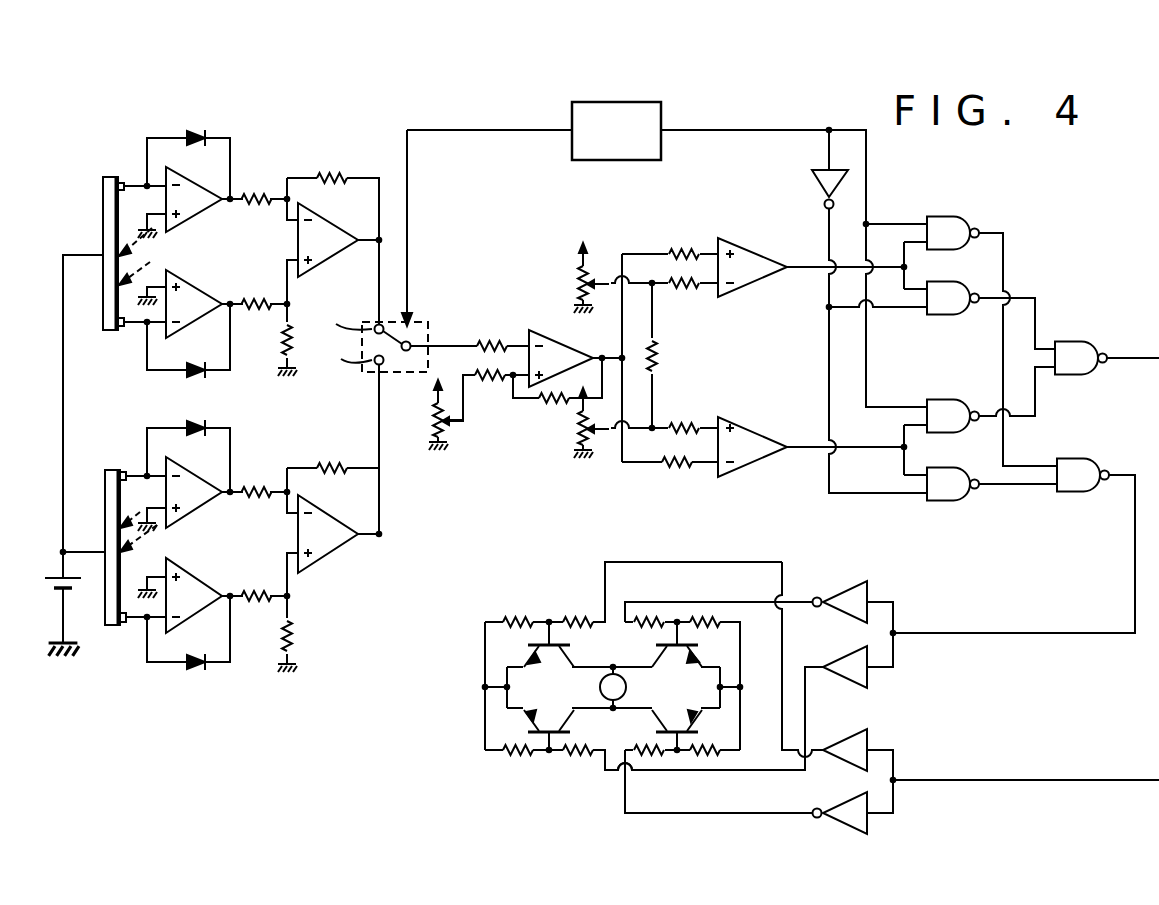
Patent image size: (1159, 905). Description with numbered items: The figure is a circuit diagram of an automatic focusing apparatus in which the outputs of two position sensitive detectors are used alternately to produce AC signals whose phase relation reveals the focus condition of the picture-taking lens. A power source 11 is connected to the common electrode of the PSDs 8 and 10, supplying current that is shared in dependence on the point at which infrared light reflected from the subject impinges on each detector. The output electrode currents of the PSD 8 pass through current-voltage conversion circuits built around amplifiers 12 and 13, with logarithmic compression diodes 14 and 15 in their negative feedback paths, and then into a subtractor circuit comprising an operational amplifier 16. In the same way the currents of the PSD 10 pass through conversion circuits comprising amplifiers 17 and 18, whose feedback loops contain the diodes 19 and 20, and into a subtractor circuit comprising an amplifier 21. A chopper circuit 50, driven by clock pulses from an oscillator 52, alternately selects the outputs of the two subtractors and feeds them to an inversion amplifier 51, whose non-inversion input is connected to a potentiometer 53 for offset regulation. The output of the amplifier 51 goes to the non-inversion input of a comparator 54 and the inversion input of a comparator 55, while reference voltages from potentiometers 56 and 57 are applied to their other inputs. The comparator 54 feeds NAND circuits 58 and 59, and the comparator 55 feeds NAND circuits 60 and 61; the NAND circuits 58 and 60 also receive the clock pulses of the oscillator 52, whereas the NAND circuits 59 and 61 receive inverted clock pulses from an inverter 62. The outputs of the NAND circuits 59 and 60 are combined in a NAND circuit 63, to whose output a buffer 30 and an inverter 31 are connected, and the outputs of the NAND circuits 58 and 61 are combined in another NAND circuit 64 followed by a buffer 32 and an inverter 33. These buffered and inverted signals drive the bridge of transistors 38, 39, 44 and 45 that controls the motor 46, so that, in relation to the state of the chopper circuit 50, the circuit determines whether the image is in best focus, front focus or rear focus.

The PSD 8 is at (104, 505).
The PSD 10 is at (104, 298).
The power source 11 is at (78, 582).
The amplifier 12 is at (198, 512).
The amplifier 13 is at (205, 576).
The logarithmic compression diode 14 is at (185, 425).
The logarithmic compression diode 15 is at (197, 670).
The operational amplifier 16 is at (330, 555).
The amplifier 17 is at (197, 218).
The amplifier 18 is at (197, 280).
The diode 19 is at (200, 128).
The diode 20 is at (195, 378).
The amplifier 21 is at (329, 258).
The buffer 30 is at (845, 740).
The inverter 31 is at (850, 805).
The buffer 32 is at (850, 656).
The inverter 33 is at (850, 590).
The transistor 38 is at (698, 718).
The transistor 39 is at (698, 658).
The transistor 44 is at (528, 647).
The transistor 45 is at (528, 730).
The motor 46 is at (628, 688).
The chopper circuit 50 is at (430, 323).
The inversion amplifier 51 is at (560, 340).
The oscillator 52 is at (620, 160).
The potentiometer 53 is at (430, 423).
The comparator 54 is at (763, 256).
The comparator 55 is at (760, 435).
The potentiometer 56 is at (574, 274).
The potentiometer 57 is at (574, 426).
The NAND circuit 58 is at (952, 217).
The NAND circuit 59 is at (948, 314).
The NAND circuit 60 is at (947, 400).
The NAND circuit 61 is at (947, 500).
The inverter 62 is at (812, 185).
The NAND circuit 63 is at (1080, 342).
The NAND circuit 64 is at (1083, 458).